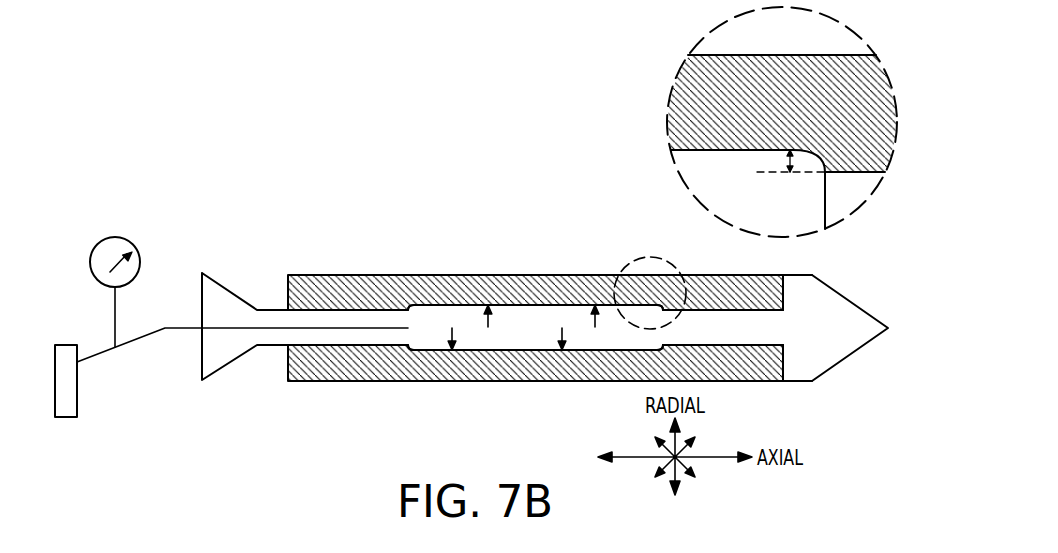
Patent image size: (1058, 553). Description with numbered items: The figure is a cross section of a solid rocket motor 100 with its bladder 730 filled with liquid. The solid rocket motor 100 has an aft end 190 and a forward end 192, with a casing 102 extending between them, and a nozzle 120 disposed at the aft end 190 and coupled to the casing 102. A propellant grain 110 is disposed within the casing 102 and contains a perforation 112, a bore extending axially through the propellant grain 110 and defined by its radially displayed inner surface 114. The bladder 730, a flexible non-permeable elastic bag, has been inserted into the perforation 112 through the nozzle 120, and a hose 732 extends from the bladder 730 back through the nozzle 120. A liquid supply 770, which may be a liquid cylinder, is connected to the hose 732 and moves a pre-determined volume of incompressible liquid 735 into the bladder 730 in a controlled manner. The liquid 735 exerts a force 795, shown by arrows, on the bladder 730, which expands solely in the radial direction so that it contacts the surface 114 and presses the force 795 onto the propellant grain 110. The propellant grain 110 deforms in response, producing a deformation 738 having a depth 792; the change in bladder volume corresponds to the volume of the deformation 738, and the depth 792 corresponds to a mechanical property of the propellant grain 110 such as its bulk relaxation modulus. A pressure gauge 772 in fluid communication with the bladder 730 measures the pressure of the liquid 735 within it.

The solid rocket motor 100 is at (699, 218).
The casing 102 is at (400, 275).
The propellant grain 110 is at (778, 358).
The perforation 112 is at (377, 337).
The surface 114 is at (672, 337).
The nozzle 120 is at (223, 367).
The aft end 190 is at (254, 303).
The forward end 192 is at (877, 288).
The bladder 730 is at (523, 306).
The hose 732 is at (175, 333).
The liquid 735 is at (537, 342).
The deformation 738 is at (703, 150).
The liquid supply 770 is at (74, 397).
The pressure gauge 772 is at (115, 237).
The depth 792 is at (787, 161).
The force 795 is at (539, 327).